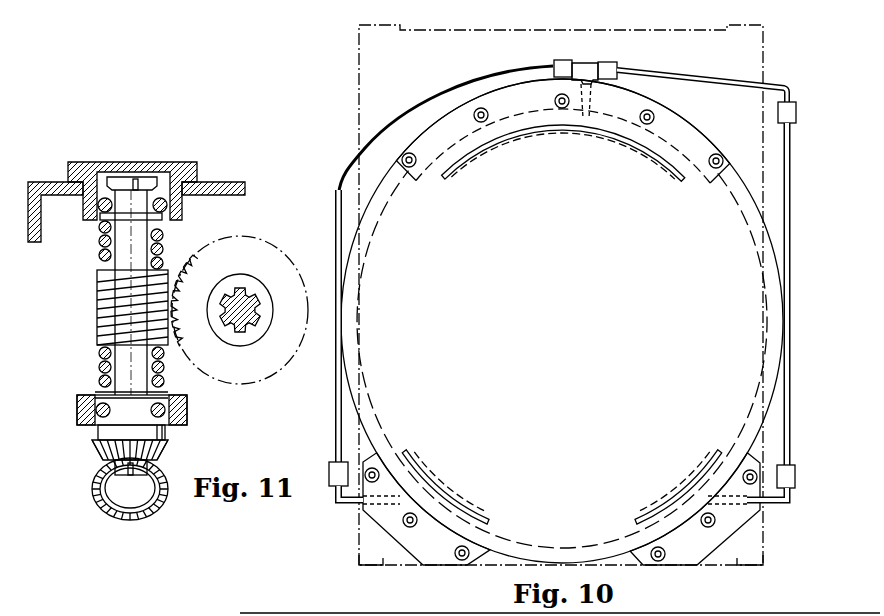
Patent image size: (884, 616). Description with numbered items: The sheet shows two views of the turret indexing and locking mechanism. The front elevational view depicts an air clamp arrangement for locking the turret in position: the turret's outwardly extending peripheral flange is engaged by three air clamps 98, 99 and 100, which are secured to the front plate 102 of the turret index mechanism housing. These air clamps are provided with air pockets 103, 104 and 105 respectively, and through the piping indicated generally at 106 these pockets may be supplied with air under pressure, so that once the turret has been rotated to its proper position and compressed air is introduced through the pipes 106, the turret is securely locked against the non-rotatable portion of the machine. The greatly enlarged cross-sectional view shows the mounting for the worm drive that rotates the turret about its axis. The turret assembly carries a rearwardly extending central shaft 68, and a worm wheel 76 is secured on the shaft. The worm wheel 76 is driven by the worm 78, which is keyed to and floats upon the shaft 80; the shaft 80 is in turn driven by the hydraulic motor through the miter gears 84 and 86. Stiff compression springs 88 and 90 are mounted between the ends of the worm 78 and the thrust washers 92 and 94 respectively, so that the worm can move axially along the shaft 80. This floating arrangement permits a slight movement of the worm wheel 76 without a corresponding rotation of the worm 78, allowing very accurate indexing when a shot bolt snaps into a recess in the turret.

In FIG. 11, the central shaft 68 is at (243, 320).
In FIG. 11, the worm wheel 76 is at (225, 367).
In FIG. 11, the worm 78 is at (98, 311).
In FIG. 11, the shaft 80 is at (100, 376).
In FIG. 11, the miter gear 84 is at (98, 506).
In FIG. 11, the miter gear 86 is at (98, 452).
In FIG. 11, the compression spring 88 is at (102, 241).
In FIG. 11, the compression spring 90 is at (100, 364).
In FIG. 11, the thrust washer 92 is at (160, 220).
In FIG. 11, the thrust washer 94 is at (106, 389).
In FIG. 10, the air clamp 98 is at (515, 100).
In FIG. 10, the air clamp 99 is at (678, 552).
In FIG. 10, the air clamp 100 is at (430, 548).
In FIG. 10, the front plate 102 is at (378, 89).
In FIG. 10, the air pocket 103 is at (478, 134).
In FIG. 10, the air pocket 104 is at (690, 511).
In FIG. 10, the air pocket 105 is at (398, 483).
In FIG. 10, the piping 106 is at (797, 86).